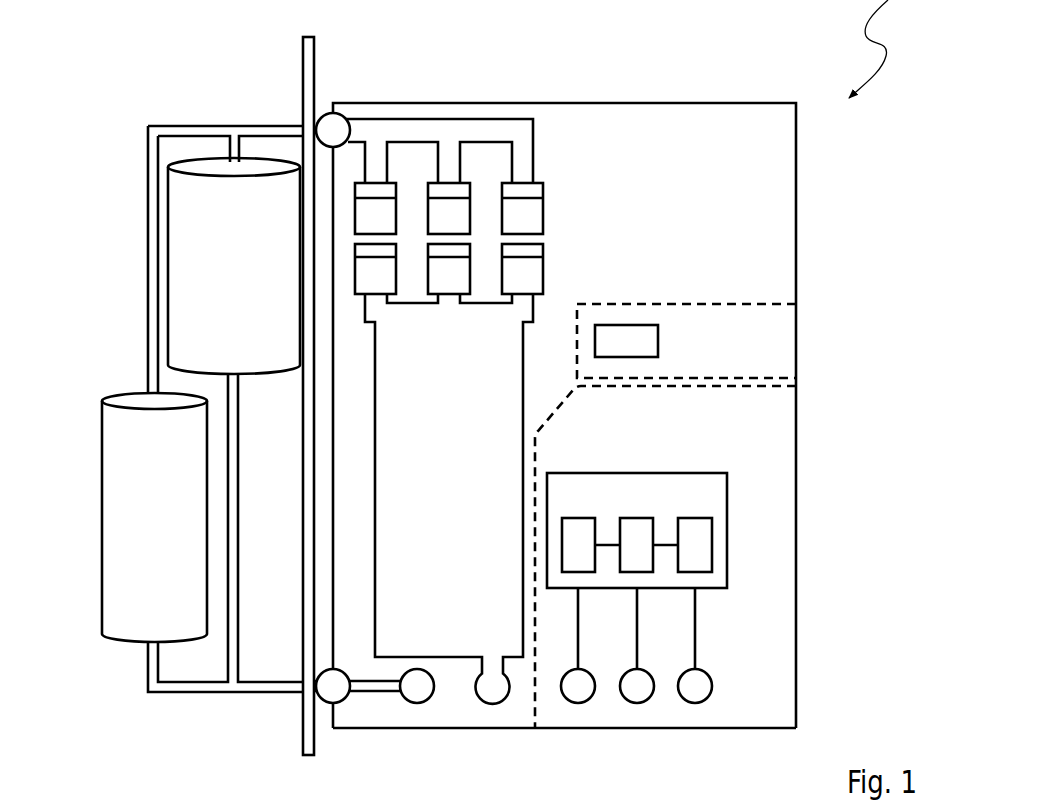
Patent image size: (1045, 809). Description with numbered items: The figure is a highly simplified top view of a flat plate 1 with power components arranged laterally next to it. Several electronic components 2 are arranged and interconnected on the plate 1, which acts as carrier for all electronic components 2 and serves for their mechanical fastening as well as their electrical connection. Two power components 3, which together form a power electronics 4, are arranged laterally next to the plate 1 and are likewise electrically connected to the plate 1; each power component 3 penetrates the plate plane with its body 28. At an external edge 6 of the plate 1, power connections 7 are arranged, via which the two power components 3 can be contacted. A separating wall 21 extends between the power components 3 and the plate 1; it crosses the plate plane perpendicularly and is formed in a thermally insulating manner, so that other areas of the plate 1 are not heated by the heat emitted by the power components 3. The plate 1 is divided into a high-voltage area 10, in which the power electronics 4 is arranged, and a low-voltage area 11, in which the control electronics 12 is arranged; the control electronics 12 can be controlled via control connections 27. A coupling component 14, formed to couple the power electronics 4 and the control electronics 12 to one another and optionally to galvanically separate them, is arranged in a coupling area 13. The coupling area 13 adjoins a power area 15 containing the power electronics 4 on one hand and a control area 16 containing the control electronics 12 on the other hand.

The flat plate 1 is at (712, 98).
The electronic components 2 is at (382, 227).
The power components 3 is at (242, 267).
The power electronics 4 is at (181, 112).
The external edge 6 is at (347, 722).
The power connections 7 is at (337, 680).
The high-voltage area 10 is at (752, 227).
The low-voltage area 11 is at (752, 443).
The control electronics 12 is at (625, 490).
The coupling area 13 is at (741, 353).
The coupling component 14 is at (622, 335).
The power area 15 is at (558, 452).
The control area 16 is at (665, 542).
The separating wall 21 is at (303, 63).
The control connections 27 is at (578, 690).
The body 28 is at (166, 253).